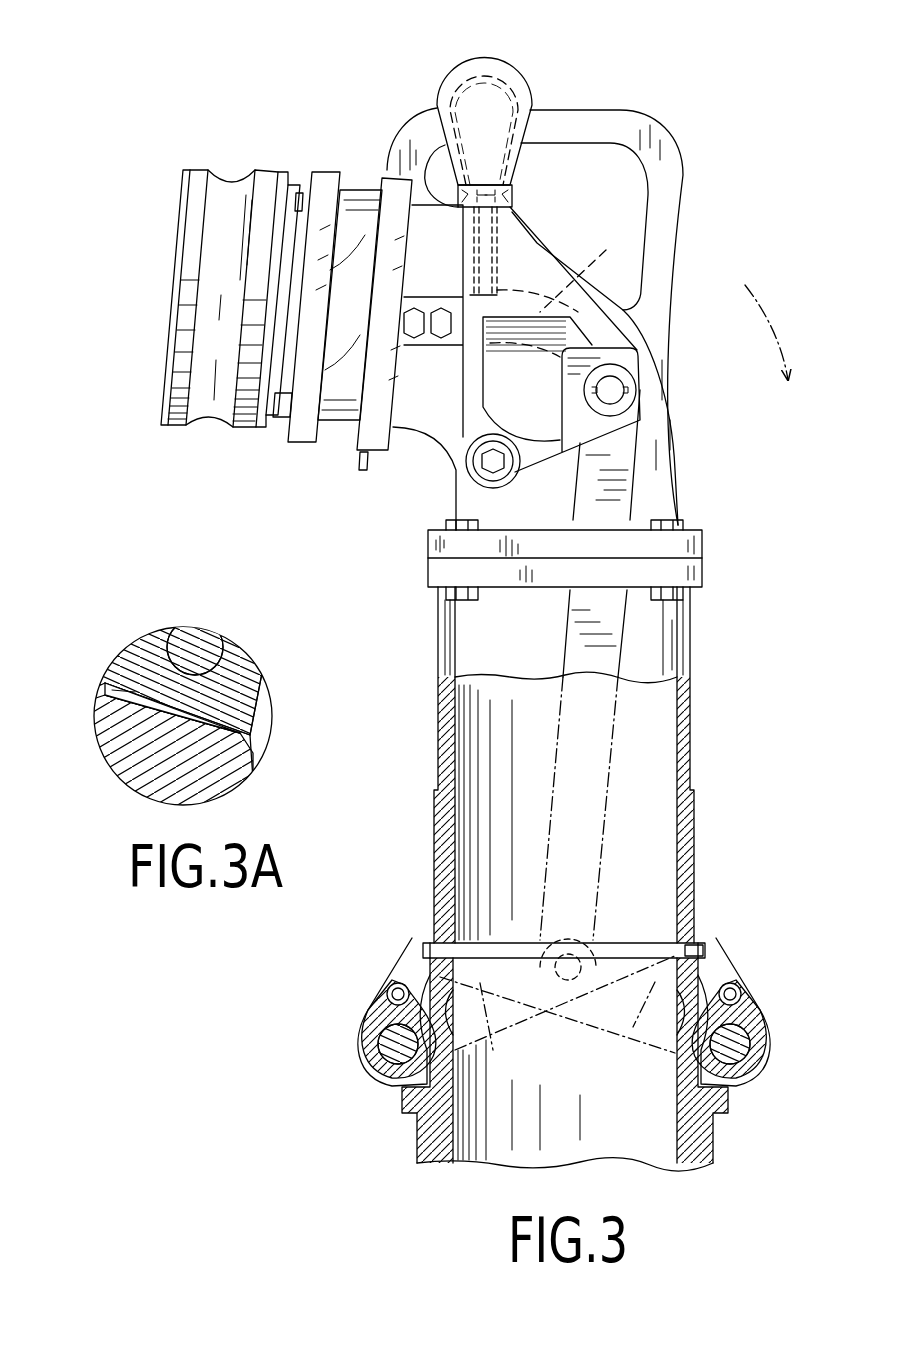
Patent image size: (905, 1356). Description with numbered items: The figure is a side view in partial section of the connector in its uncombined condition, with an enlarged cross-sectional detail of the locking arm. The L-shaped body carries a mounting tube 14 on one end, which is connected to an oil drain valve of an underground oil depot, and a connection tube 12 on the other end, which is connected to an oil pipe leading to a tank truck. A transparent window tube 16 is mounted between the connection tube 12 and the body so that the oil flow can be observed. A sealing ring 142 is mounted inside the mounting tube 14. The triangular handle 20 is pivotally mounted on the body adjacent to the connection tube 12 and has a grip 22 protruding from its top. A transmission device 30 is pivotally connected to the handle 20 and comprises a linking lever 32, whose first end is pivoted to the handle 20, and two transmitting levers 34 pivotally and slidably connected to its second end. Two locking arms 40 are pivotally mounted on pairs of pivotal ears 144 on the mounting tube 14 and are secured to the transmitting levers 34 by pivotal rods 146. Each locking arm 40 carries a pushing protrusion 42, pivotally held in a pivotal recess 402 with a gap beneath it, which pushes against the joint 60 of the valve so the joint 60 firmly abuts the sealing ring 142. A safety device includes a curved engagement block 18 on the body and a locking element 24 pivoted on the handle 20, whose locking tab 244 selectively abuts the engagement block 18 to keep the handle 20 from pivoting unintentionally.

In FIG. 3, the connection tube 12 is at (237, 165).
In FIG. 3, the mounting tube 14 is at (411, 750).
In FIG. 3, the transparent window tube 16 is at (345, 247).
In FIG. 3, the engagement block 18 is at (594, 266).
In FIG. 3, the handle 20 is at (537, 190).
In FIG. 3, the grip 22 is at (477, 72).
In FIG. 3, the locking element 24 is at (445, 90).
In FIG. 3, the locking tab 244 is at (481, 292).
In FIG. 3, the transmission device 30 is at (636, 648).
In FIG. 3, the linking lever 32 is at (628, 478).
In FIG. 3, the transmitting lever 34 is at (525, 1000).
In FIG. 3, the locking arm 40 is at (357, 1047).
In FIG. 3A, the locking arm 40 is at (120, 755).
In FIG. 3, the pushing protrusion 42 is at (393, 992).
In FIG. 3A, the pushing protrusion 42 is at (125, 672).
In FIG. 3A, the pivotal recess 402 is at (140, 697).
In FIG. 3, the joint 60 is at (445, 1100).
In FIG. 3, the sealing ring 142 is at (697, 952).
In FIG. 3, the pivotal ears 144 is at (412, 958).
In FIG. 3, the pivotal rod 146 is at (392, 1062).